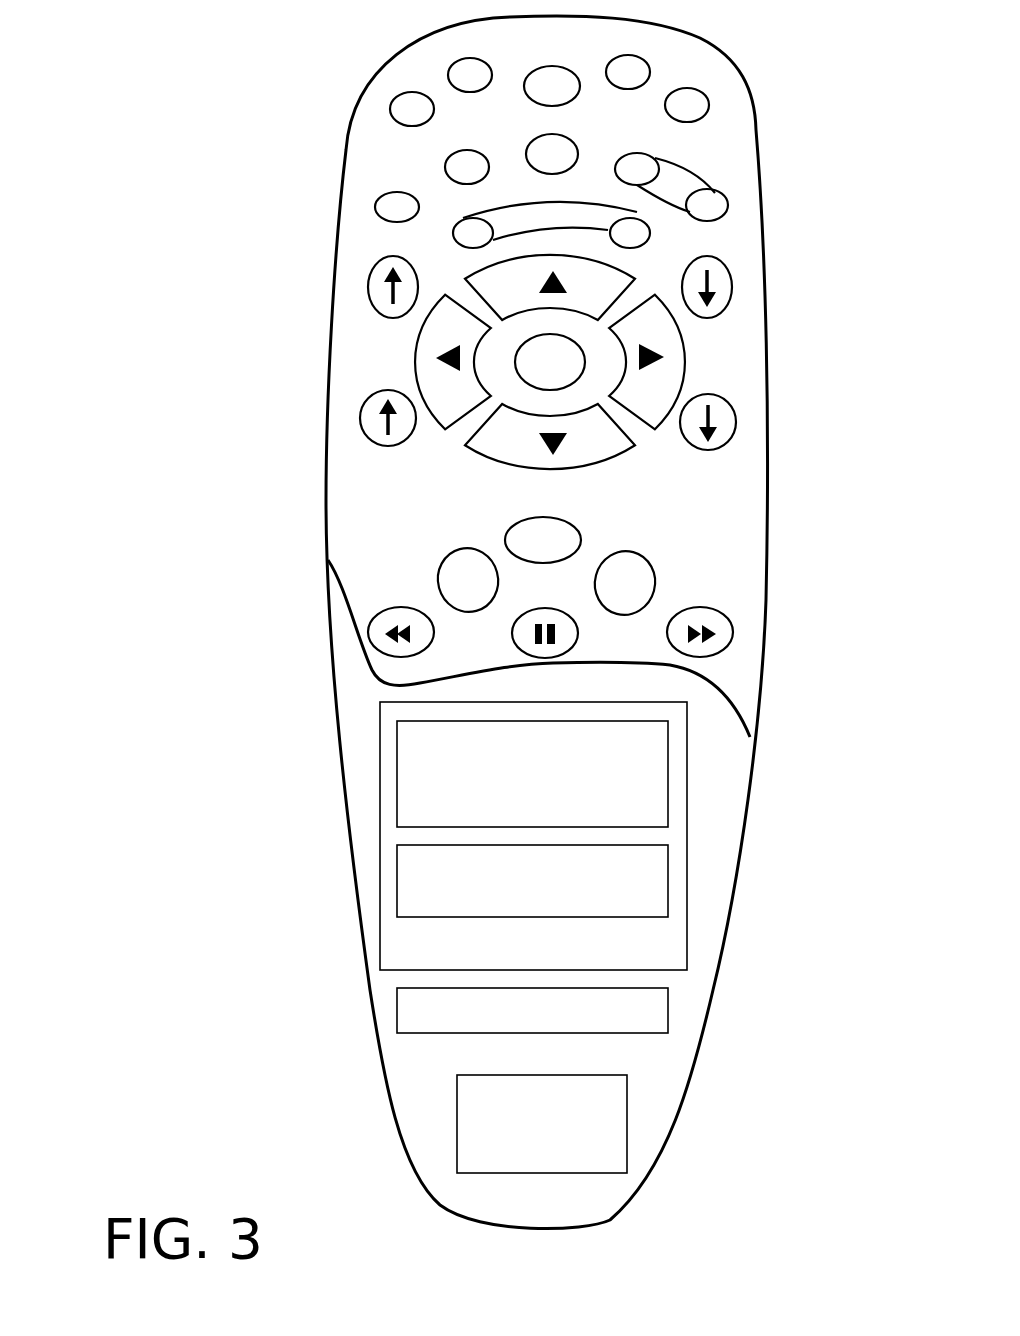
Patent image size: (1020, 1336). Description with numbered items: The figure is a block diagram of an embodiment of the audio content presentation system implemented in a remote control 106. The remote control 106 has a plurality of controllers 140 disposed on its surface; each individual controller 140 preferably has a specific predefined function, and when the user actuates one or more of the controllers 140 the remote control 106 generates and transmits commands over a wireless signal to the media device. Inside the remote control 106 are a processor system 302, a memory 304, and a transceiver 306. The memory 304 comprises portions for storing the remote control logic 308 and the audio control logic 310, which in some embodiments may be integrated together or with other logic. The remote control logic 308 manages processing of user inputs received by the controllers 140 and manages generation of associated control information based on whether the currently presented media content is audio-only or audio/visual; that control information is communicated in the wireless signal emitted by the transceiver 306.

The remote control 106 is at (331, 318).
The controllers 140 is at (377, 154).
The processor system 302 is at (608, 1166).
The memory 304 is at (668, 959).
The transceiver 306 is at (650, 1022).
The remote control logic 308 is at (650, 906).
The audio control logic 310 is at (647, 817).